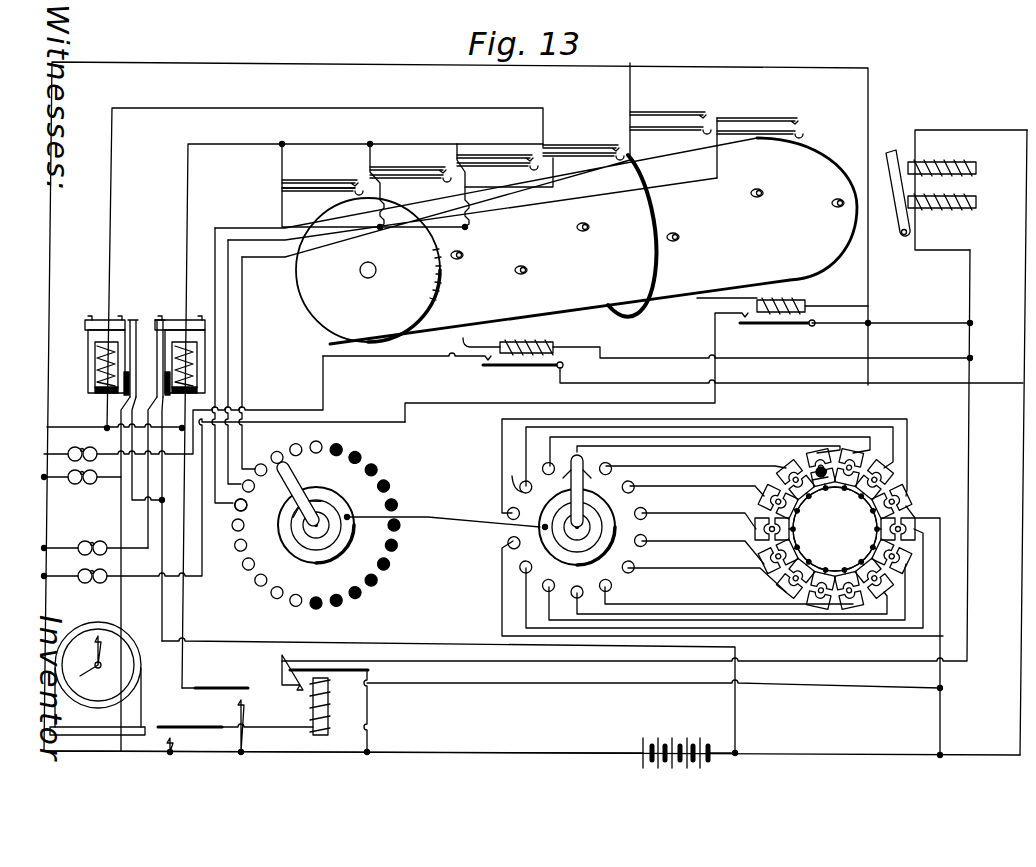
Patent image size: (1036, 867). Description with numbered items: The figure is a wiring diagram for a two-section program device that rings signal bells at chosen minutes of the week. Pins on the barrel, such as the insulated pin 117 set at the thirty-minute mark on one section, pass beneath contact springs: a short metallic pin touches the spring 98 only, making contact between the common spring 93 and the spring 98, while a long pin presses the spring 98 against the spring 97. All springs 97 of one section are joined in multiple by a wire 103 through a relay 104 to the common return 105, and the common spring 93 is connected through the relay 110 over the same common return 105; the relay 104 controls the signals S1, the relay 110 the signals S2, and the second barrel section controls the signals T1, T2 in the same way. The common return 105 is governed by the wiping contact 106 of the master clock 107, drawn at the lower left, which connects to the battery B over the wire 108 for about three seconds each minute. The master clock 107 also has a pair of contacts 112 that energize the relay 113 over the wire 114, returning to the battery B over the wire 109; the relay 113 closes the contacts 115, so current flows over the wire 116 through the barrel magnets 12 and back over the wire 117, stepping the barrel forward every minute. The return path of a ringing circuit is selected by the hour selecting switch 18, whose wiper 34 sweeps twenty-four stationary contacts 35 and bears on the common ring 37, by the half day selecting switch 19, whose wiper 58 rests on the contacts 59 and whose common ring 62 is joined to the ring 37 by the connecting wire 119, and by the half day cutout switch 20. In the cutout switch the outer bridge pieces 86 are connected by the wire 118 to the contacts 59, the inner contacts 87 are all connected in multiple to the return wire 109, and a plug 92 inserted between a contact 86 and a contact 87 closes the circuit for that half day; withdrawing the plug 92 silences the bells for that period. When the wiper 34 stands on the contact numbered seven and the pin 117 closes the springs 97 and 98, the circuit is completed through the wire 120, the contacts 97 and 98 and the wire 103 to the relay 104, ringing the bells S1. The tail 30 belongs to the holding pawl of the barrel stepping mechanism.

The common return 105 is at (868, 99).
The wire 103 is at (189, 183).
The wire 120 is at (222, 227).
The spring 97 is at (484, 153).
The spring 98 is at (301, 190).
The tail 30 is at (437, 257).
The pin 117 is at (464, 254).
The electromagnets 12 is at (977, 200).
The wire 116 is at (969, 512).
The relay 110 is at (536, 340).
The common spring 93 is at (489, 332).
The relay 104 is at (176, 362).
The signals S2 is at (70, 449).
The signals T1 is at (76, 483).
The signals S1 is at (85, 542).
The signals T2 is at (82, 584).
The common ring 37 is at (316, 564).
The wiper 34 is at (297, 474).
The hour selecting switch 18 is at (386, 466).
The stationary contacts 35 is at (247, 505).
The connecting wire 119 is at (441, 518).
The switch wiper 58 is at (579, 487).
The contacts 59 is at (585, 457).
The common ring 62 is at (556, 552).
The half day selecting switch 19 is at (511, 475).
The wire 118 is at (690, 446).
The half day cutout switch 20 is at (835, 529).
The inner bridge contacts 87 is at (835, 529).
The outer bridge pieces 86 is at (821, 466).
The plug 92 is at (830, 477).
The wire 109 is at (931, 517).
The wire 114 is at (770, 685).
The master clock 107 is at (118, 626).
The wiping contact 106 is at (213, 688).
The contacts 112 is at (182, 726).
The relay 113 is at (329, 708).
The contacts 115 is at (304, 696).
The wire 108 is at (312, 752).
The battery B is at (682, 743).